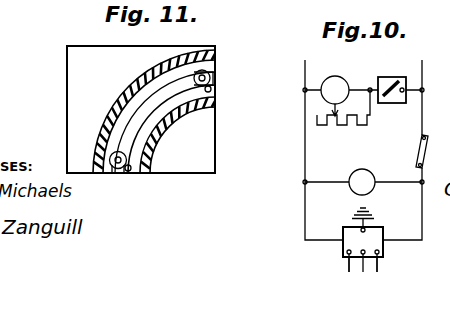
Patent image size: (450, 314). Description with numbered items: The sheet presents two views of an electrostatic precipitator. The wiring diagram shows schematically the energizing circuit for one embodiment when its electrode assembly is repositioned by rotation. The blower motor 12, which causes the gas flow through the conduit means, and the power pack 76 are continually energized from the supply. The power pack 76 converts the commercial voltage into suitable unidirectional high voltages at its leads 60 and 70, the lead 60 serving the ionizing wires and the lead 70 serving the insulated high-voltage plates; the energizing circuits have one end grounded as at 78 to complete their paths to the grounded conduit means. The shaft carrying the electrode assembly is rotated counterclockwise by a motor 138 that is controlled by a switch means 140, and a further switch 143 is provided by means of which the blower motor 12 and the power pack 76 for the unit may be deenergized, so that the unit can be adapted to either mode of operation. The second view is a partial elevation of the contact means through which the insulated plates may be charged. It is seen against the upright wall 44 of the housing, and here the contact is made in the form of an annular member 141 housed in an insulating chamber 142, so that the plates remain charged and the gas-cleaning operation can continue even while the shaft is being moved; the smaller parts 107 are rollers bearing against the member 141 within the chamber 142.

In FIG. 11, the vertical walls 44 is at (76, 91).
In FIG. 11, the annular member 141 is at (212, 76).
In FIG. 11, the pivot pin 107 is at (212, 91).
In FIG. 11, the insulating chamber 142 is at (110, 171).
In FIG. 10, the motor 138 is at (327, 80).
In FIG. 10, the switch means 140 is at (399, 78).
In FIG. 10, the switch 143 is at (418, 152).
In FIG. 10, the blower motor 12 is at (350, 178).
In FIG. 10, the ground 78 is at (366, 212).
In FIG. 10, the power pack 76 is at (344, 234).
In FIG. 10, the lead 70 is at (348, 270).
In FIG. 10, the lead 60 is at (379, 266).